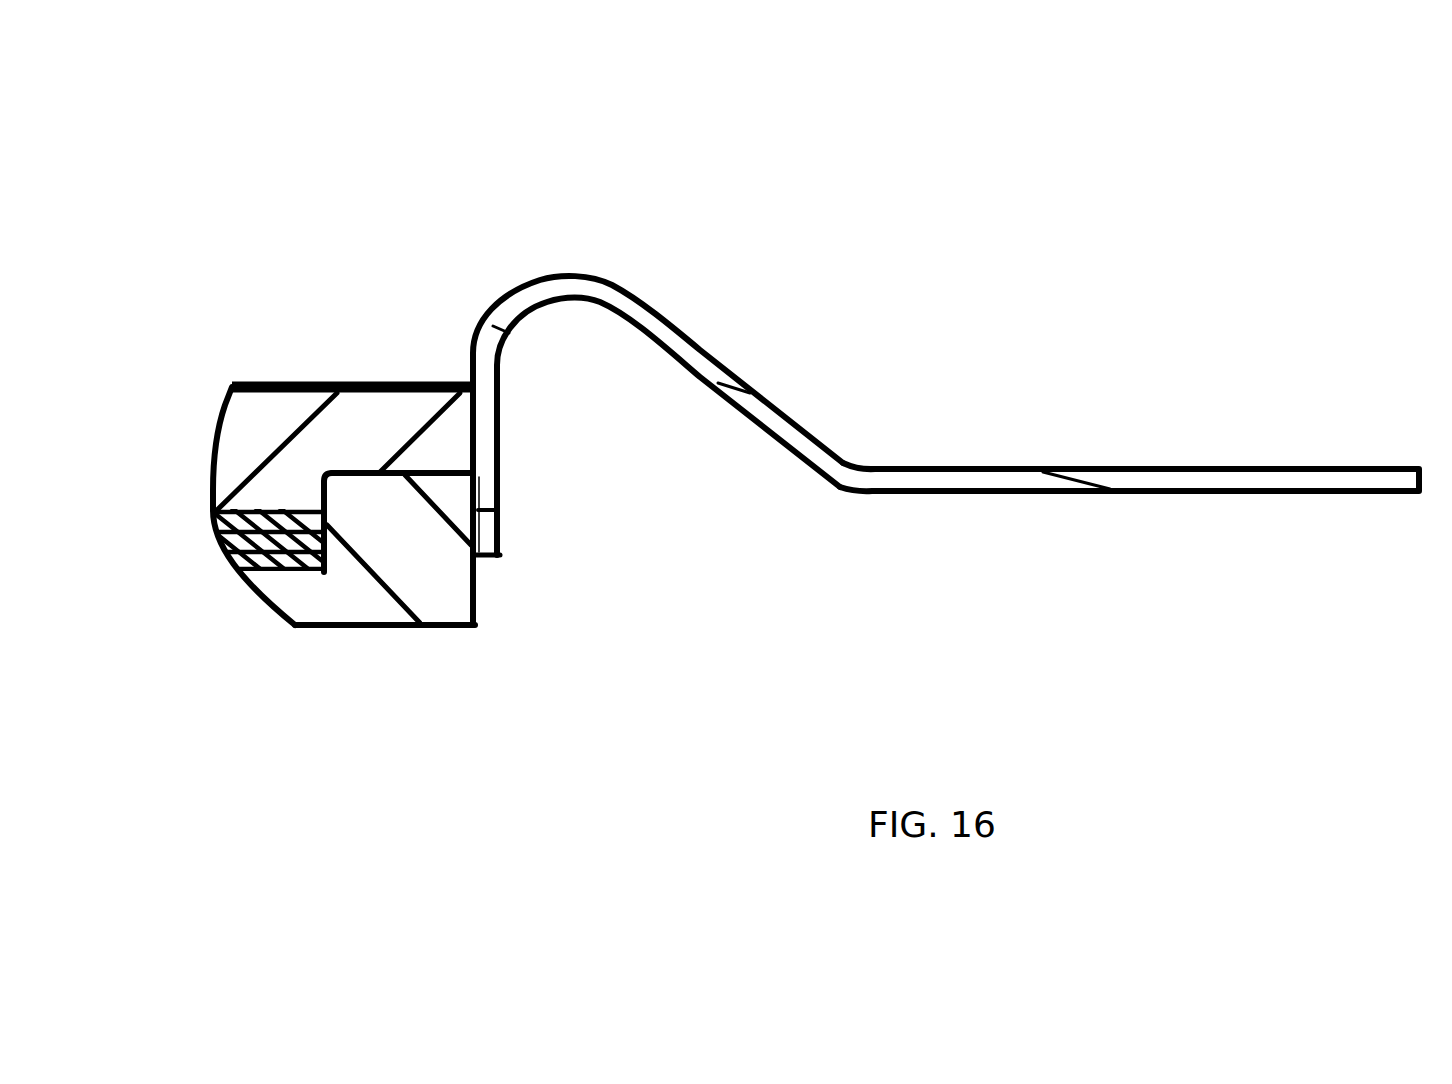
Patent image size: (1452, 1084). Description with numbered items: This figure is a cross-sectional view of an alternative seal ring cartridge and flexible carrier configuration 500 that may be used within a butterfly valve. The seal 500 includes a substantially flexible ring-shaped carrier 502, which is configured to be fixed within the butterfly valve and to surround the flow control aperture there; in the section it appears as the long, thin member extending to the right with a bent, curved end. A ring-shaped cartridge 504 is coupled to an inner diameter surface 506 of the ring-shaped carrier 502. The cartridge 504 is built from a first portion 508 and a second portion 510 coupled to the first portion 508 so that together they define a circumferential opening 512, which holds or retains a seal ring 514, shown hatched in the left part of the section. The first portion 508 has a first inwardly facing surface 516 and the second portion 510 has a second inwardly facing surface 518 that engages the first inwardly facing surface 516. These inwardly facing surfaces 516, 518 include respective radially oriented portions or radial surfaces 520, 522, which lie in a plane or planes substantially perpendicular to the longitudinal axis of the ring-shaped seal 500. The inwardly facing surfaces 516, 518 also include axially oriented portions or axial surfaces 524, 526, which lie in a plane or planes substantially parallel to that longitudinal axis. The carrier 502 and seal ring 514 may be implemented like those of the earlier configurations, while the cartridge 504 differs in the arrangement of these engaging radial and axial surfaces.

The seal ring cartridge and flexible carrier configuration 500 is at (1254, 253).
The flexible ring-shaped carrier 502 is at (823, 452).
The ring-shaped cartridge 504 is at (198, 384).
The inner diameter surface 506 is at (481, 483).
The first portion 508 is at (273, 382).
The second portion 510 is at (345, 627).
The circumferential opening 512 is at (295, 572).
The seal ring 514 is at (222, 556).
The first inwardly facing surface 516 is at (357, 470).
The second inwardly facing surface 518 is at (330, 503).
The radial surface 520 is at (445, 470).
The radial surface 522 is at (445, 473).
The axial surface 524 is at (323, 507).
The axial surface 526 is at (377, 477).